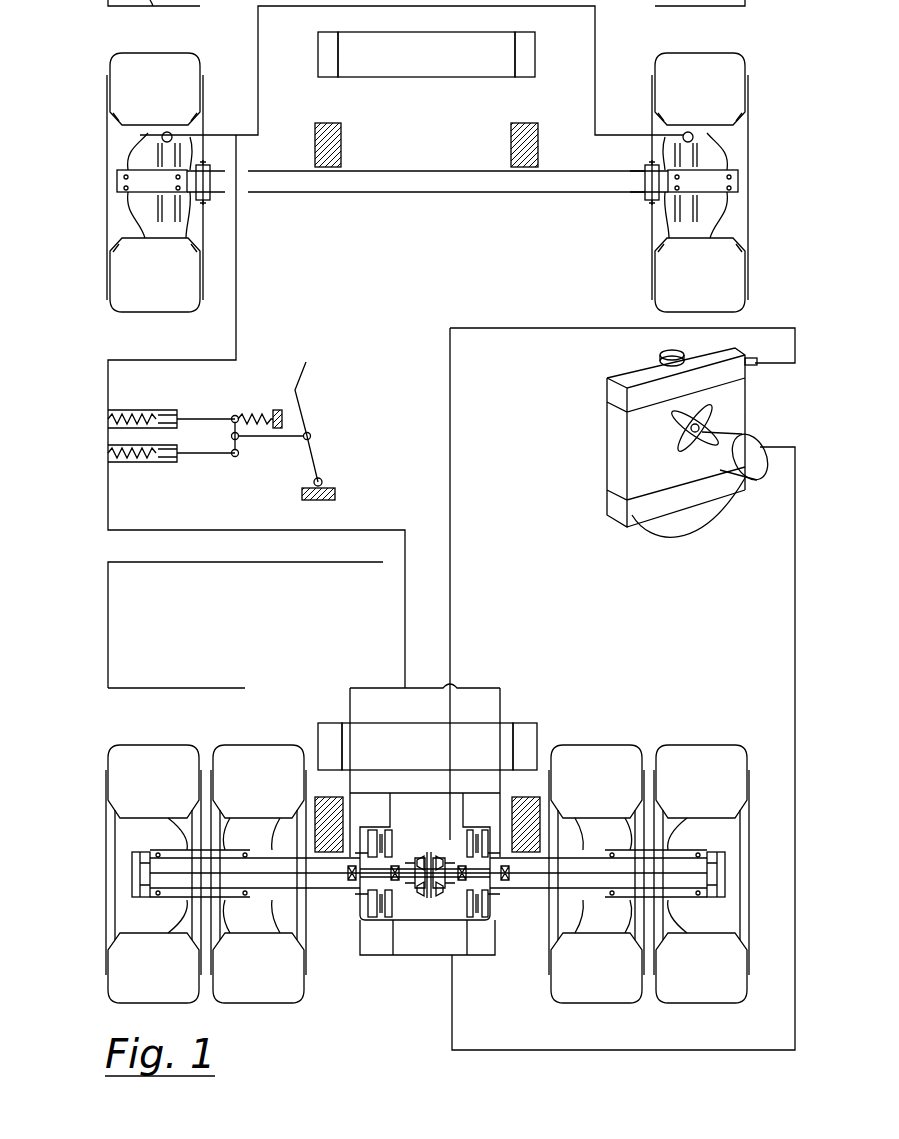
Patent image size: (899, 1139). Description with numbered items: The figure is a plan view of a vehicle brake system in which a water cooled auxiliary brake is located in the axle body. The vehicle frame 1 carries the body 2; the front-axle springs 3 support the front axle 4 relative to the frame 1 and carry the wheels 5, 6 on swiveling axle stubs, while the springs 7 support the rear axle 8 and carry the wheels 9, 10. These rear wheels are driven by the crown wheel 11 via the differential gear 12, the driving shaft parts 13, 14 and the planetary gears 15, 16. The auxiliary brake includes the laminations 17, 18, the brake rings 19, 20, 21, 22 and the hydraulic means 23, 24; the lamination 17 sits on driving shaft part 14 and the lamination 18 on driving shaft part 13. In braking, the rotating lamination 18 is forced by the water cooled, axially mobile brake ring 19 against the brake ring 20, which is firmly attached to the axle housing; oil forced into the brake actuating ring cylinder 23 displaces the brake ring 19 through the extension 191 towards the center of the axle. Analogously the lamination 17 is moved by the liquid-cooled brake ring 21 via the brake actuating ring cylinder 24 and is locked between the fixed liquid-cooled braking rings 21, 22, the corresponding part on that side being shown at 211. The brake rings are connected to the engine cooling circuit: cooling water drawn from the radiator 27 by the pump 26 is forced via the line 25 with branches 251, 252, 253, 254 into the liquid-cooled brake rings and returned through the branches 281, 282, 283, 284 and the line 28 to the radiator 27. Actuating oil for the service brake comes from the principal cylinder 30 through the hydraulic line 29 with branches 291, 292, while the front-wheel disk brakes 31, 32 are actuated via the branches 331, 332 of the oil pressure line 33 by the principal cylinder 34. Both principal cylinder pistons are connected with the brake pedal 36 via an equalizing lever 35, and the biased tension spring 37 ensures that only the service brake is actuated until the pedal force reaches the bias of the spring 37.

The vehicle frame 1 is at (330, 57).
The body 2 is at (170, 688).
The front-axle springs 3 is at (510, 137).
The front axle 4 is at (437, 178).
The wheel 5 is at (168, 132).
The wheel 6 is at (687, 132).
The springs 7 is at (330, 838).
The rear axle 8 is at (270, 860).
The wheel 9 is at (165, 840).
The wheel 10 is at (682, 840).
The crown wheel 11 is at (415, 842).
The differential gear 12 is at (432, 870).
The driving shaft part 13 is at (255, 870).
The driving shaft part 14 is at (590, 870).
The planetary gear 15 is at (142, 870).
The planetary gear 16 is at (710, 850).
The lamination 17 is at (513, 888).
The lamination 18 is at (350, 887).
The brake ring 19 is at (353, 937).
The extension 191 is at (360, 833).
The brake ring 20 is at (397, 905).
The brake ring 21 is at (505, 893).
The clutch 211 is at (490, 830).
The brake ring 22 is at (458, 903).
The brake actuating ring cylinder 23 is at (357, 903).
The brake actuating ring cylinder 24 is at (510, 888).
The line 25 is at (530, 1050).
The branch 251 is at (355, 913).
The branch 252 is at (397, 953).
The branch 253 is at (465, 942).
The branch 254 is at (495, 940).
The pump 26 is at (750, 450).
The radiator 27 is at (612, 450).
The line 28 is at (448, 433).
The branch 281 is at (357, 802).
The branch 282 is at (390, 830).
The branch 283 is at (468, 833).
The branch 284 is at (495, 833).
The hydraulic line 29 is at (205, 528).
The branch 291 is at (372, 688).
The branch 292 is at (478, 688).
The principal cylinder 30 is at (132, 460).
The front-wheel disk brake 31 is at (180, 202).
The front-wheel disk brake 32 is at (675, 202).
The oil pressure line 33 is at (238, 302).
The branch 331 is at (219, 134).
The branch 332 is at (597, 62).
The principal cylinder 34 is at (135, 410).
The equalizing lever 35 is at (238, 453).
The brake pedal 36 is at (307, 373).
The tension spring 37 is at (268, 396).